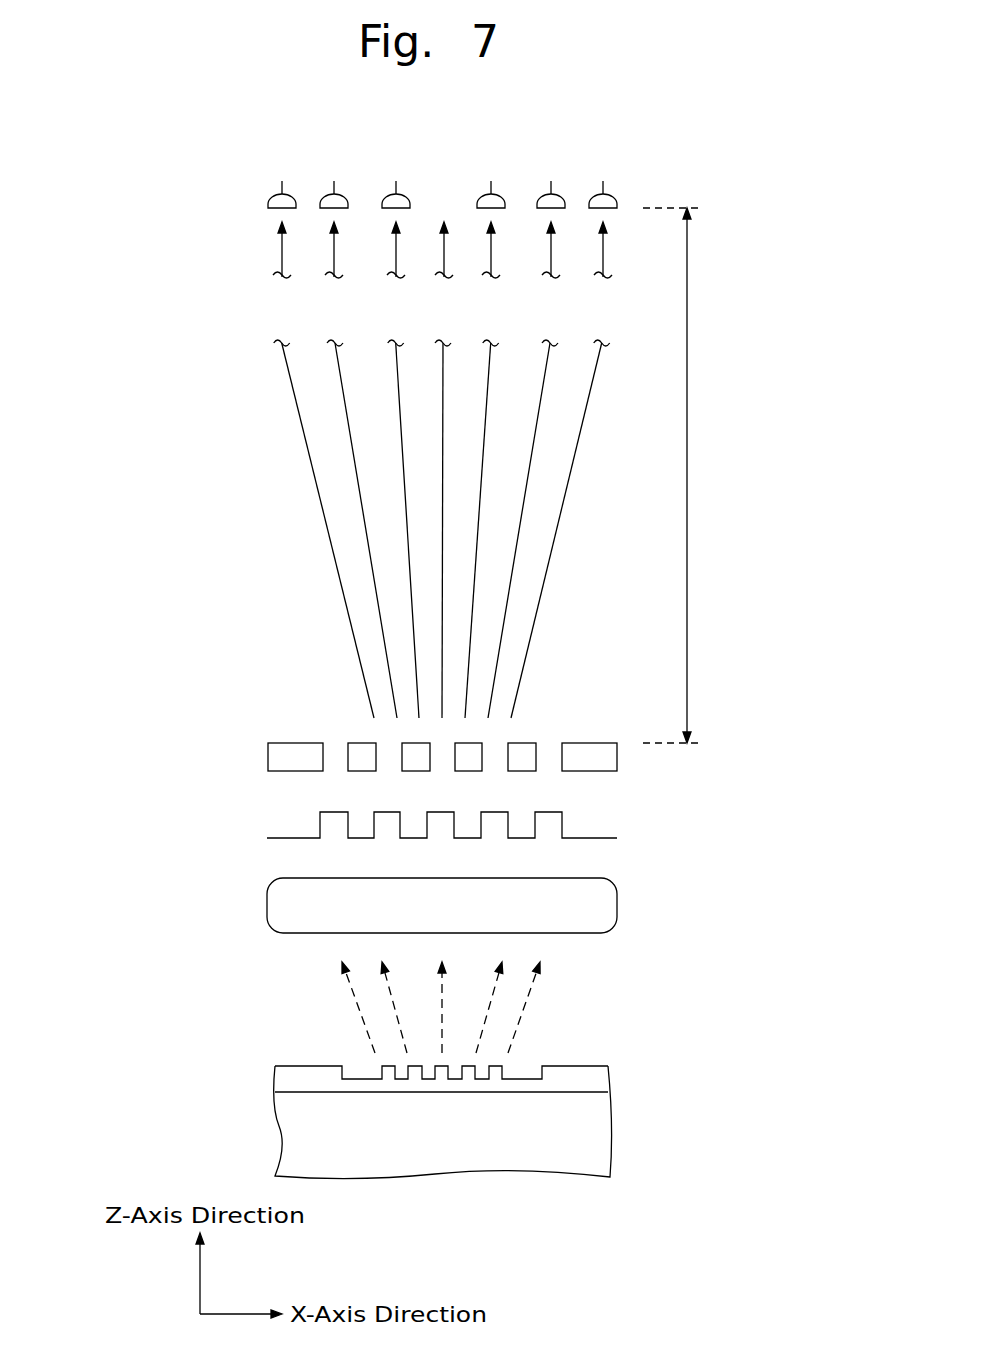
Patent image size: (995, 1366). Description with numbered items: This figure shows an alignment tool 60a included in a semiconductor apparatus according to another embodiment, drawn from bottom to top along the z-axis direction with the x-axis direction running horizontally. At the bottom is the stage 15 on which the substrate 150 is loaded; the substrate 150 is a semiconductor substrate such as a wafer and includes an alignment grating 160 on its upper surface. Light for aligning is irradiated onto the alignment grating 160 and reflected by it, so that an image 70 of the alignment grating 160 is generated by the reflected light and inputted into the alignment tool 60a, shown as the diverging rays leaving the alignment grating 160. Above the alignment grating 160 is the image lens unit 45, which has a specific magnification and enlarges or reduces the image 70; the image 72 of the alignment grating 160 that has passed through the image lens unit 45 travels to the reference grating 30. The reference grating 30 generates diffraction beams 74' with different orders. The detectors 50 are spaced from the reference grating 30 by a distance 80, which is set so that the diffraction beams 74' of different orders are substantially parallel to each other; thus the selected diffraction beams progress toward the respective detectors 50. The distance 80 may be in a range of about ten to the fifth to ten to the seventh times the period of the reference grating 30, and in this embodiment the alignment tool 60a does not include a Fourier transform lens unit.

The detectors 50 is at (269, 199).
The alignment tool 60a is at (341, 470).
The diffraction beams 74' is at (403, 529).
The distance 80 is at (681, 475).
The reference grating 30 is at (258, 756).
The image 72 is at (259, 822).
The image lens unit 45 is at (610, 907).
The image 70 is at (356, 1007).
The alignment grating 160 is at (511, 1065).
The substrate 150 is at (481, 1060).
The stage 15 is at (481, 1102).